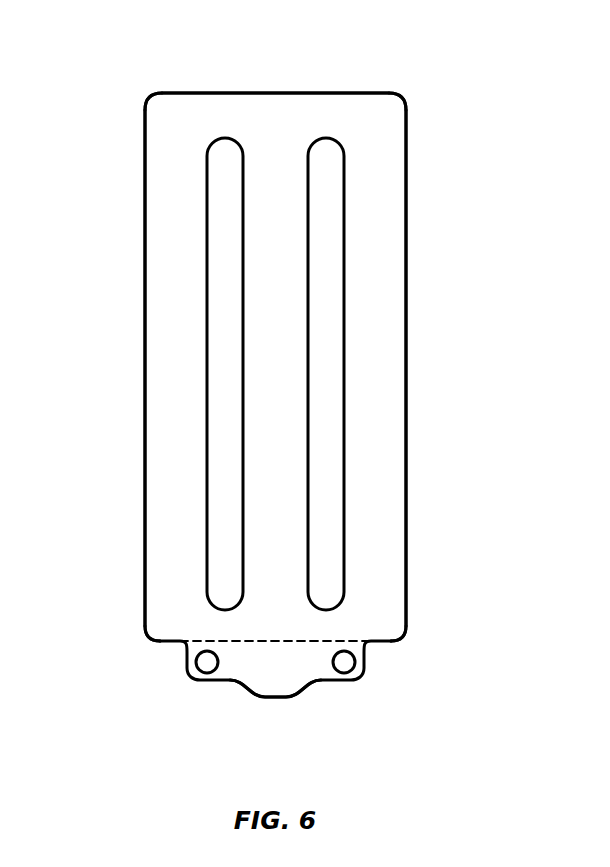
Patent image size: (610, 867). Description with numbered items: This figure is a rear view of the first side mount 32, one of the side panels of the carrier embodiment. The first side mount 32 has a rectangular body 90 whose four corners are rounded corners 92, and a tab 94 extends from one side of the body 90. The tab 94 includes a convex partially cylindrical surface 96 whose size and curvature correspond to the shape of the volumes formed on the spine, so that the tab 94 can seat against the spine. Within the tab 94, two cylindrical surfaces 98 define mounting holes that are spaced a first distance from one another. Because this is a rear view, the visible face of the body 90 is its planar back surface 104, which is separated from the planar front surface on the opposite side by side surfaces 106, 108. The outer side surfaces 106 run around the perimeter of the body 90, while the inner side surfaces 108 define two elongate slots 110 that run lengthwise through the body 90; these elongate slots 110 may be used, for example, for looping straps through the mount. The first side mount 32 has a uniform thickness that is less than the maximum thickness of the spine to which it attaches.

The first side mount 32 is at (313, 391).
The rectangular body 90 is at (392, 408).
The rounded corners 92 is at (150, 98).
The tab 94 is at (278, 695).
The convex partially cylindrical surface 96 is at (246, 694).
The cylindrical surfaces 98 is at (199, 668).
The planar back surface 104 is at (155, 369).
The side surfaces 106 is at (275, 92).
The side surfaces 108 is at (208, 333).
The elongate slots 110 is at (228, 242).